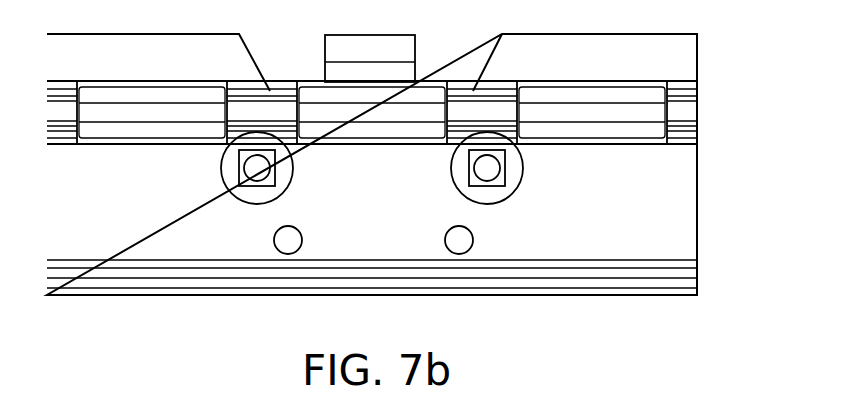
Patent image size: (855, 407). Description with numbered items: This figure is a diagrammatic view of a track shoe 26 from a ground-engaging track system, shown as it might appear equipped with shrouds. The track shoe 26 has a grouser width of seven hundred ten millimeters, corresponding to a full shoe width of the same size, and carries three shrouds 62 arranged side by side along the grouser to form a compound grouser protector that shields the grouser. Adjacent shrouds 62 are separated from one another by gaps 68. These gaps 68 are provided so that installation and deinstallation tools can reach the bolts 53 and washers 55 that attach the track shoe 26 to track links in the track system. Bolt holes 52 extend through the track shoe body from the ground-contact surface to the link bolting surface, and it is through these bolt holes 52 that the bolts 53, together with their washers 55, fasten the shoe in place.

The track shoe 26 is at (420, 154).
The bolt holes 52 is at (286, 237).
The bolts 53 is at (244, 183).
The washers 55 is at (283, 173).
The shrouds 62 is at (158, 92).
The gaps 68 is at (288, 86).